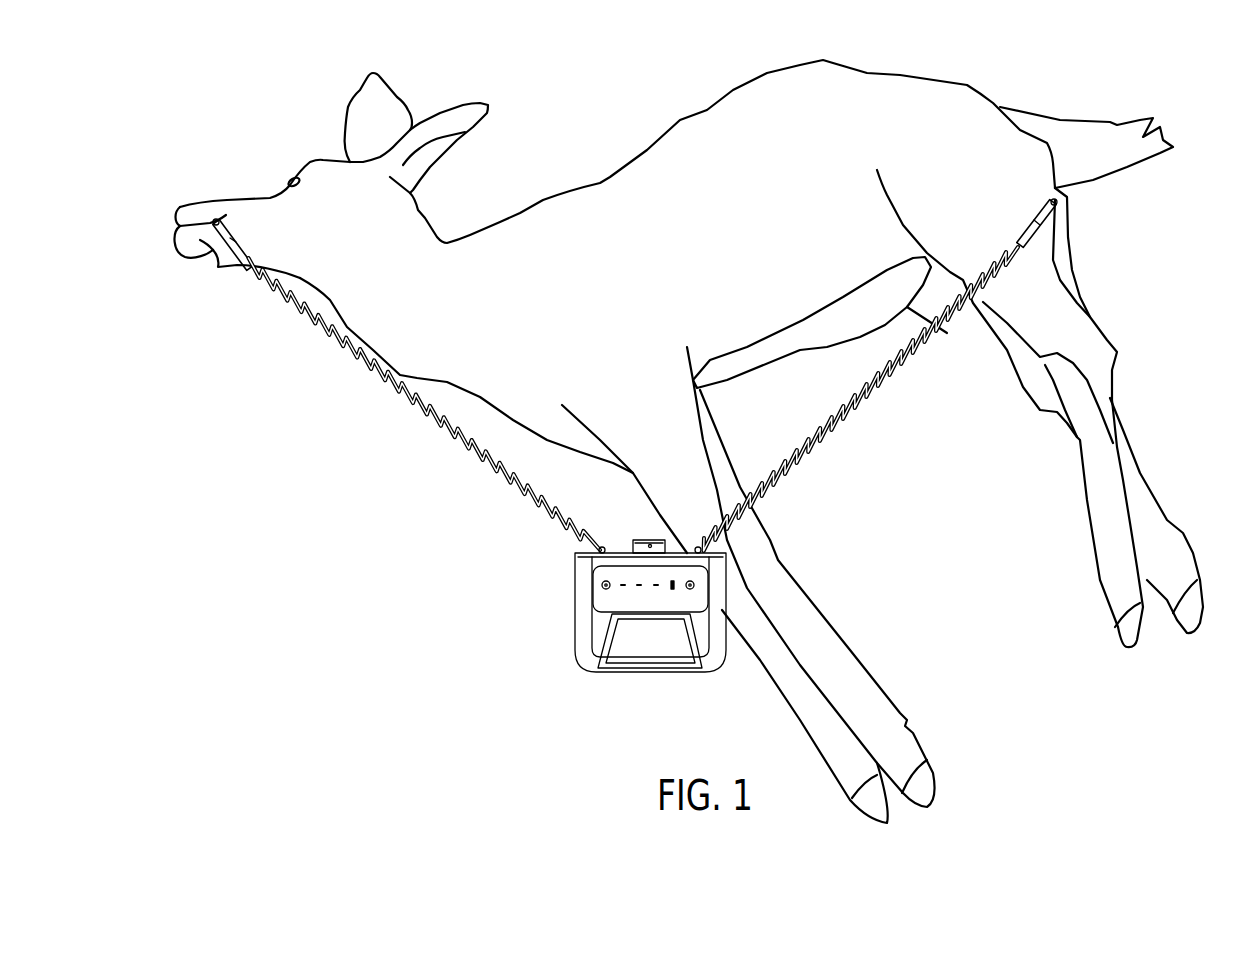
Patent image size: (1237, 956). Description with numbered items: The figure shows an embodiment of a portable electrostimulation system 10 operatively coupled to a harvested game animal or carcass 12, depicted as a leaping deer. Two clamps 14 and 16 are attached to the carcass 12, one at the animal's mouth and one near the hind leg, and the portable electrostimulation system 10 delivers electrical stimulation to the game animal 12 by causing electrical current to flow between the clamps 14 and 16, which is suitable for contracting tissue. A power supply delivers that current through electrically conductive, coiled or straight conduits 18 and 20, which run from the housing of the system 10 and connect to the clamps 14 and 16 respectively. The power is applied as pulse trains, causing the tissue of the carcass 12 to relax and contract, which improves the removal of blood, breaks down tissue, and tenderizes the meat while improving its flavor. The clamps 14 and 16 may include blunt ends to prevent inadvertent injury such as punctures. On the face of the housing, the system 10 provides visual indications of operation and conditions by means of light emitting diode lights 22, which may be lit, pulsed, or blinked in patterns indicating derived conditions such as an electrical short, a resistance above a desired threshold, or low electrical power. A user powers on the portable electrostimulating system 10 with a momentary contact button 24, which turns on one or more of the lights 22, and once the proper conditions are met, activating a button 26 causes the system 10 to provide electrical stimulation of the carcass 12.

The portable electrostimulation system 10 is at (659, 637).
The harvested game animal or carcass 12 is at (1104, 96).
The clamp 14 is at (238, 256).
The clamp 16 is at (1032, 226).
The conduit 18 is at (398, 393).
The conduit 20 is at (862, 419).
The light emitting diode (LED) lights 22 is at (645, 589).
The momentary contact button 24 is at (604, 584).
The button 26 is at (695, 583).